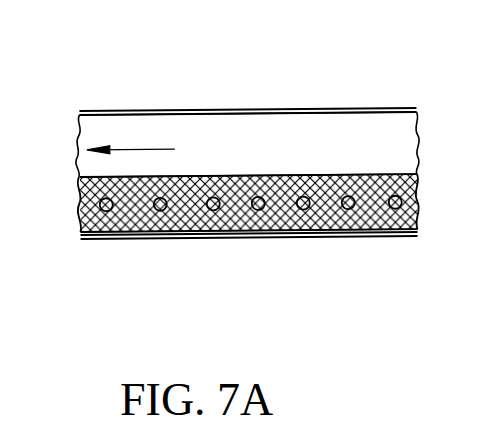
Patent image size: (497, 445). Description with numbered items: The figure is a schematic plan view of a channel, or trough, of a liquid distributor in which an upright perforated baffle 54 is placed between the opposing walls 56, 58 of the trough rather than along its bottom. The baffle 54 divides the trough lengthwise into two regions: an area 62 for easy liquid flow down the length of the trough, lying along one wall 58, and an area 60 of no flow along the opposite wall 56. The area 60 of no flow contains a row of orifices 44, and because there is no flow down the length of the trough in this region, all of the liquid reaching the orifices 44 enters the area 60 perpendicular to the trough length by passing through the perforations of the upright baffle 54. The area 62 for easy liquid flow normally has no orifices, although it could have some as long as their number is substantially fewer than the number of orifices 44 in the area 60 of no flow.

The orifices 44 is at (213, 212).
The upright perforated baffle 54 is at (99, 181).
The opposing wall 56 is at (338, 238).
The opposing wall 58 is at (123, 112).
The area of no flow 60 is at (80, 239).
The area for easy liquid flow 62 is at (258, 137).